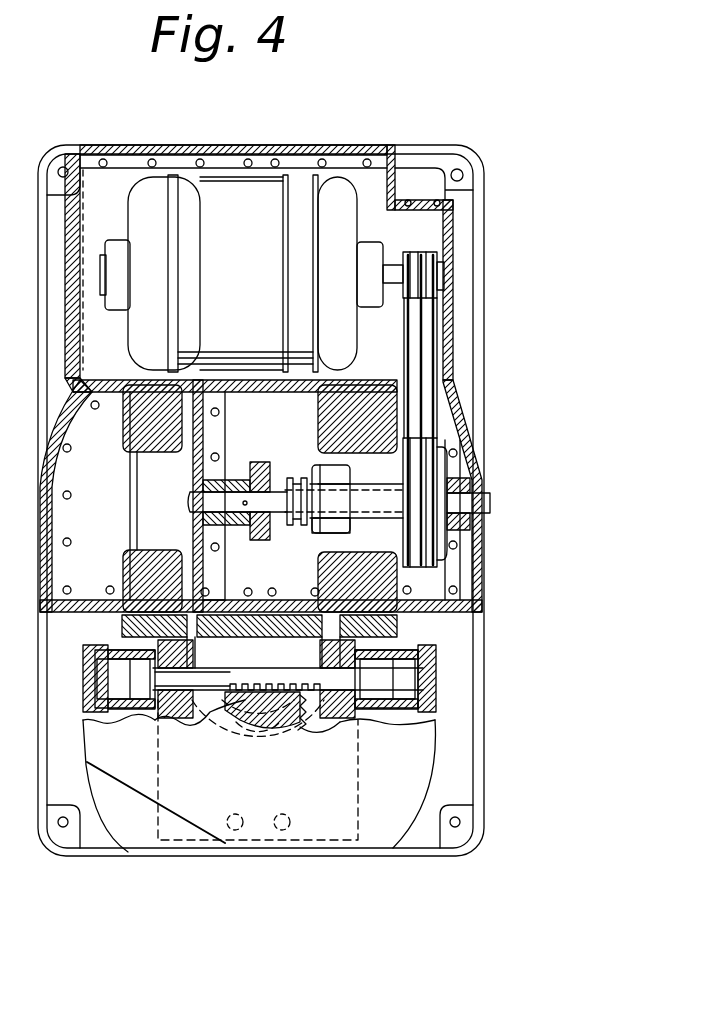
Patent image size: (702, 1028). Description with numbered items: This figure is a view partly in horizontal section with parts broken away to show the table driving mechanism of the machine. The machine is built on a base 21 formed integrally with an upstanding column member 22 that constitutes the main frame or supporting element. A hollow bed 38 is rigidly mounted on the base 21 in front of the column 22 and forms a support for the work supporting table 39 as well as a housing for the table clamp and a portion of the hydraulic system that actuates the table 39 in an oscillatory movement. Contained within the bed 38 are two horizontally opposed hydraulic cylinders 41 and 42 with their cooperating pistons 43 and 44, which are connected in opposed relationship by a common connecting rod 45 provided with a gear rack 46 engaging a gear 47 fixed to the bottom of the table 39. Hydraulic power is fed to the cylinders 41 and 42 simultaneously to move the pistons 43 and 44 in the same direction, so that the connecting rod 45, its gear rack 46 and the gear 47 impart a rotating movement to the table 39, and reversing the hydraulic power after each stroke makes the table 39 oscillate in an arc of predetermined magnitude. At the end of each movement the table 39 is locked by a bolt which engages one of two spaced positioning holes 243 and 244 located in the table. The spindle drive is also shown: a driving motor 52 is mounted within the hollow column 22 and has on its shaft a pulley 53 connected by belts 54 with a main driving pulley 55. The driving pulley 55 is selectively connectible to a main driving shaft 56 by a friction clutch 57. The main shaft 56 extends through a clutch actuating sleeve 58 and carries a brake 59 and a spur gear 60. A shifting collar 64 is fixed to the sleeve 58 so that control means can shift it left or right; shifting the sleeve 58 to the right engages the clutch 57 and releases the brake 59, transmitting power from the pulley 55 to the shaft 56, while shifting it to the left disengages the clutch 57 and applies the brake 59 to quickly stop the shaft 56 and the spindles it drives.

The base 21 is at (462, 772).
The column member 22 is at (480, 582).
The hollow bed 38 is at (135, 826).
The work supporting table 39 is at (388, 820).
The hydraulic cylinder 41 is at (86, 680).
The hydraulic cylinder 42 is at (438, 680).
The piston 43 is at (142, 716).
The piston 44 is at (405, 716).
The connecting rod 45 is at (220, 680).
The gear rack 46 is at (292, 690).
The gear 47 is at (300, 728).
The driving motor 52 is at (236, 195).
The pulley 53 is at (440, 263).
The belts 54 is at (420, 384).
The main driving pulley 55 is at (440, 472).
The main driving shaft 56 is at (470, 500).
The friction clutch 57 is at (440, 530).
The clutch actuating sleeve 58 is at (366, 497).
The brake 59 is at (345, 522).
The spur gear 60 is at (256, 462).
The shifting collar 64 is at (300, 526).
The positioning hole 243 is at (236, 830).
The positioning hole 244 is at (282, 830).